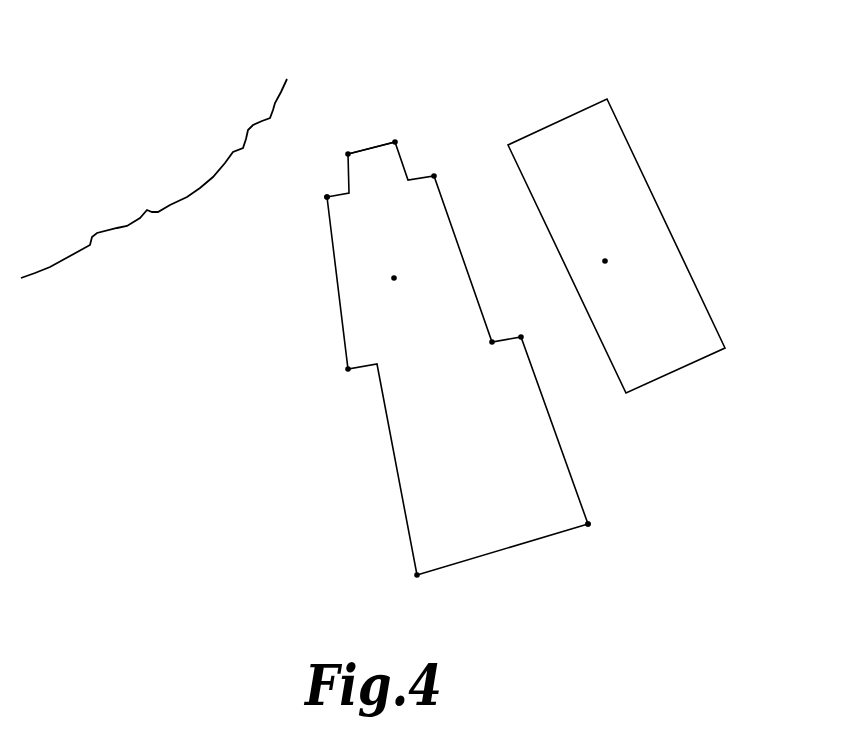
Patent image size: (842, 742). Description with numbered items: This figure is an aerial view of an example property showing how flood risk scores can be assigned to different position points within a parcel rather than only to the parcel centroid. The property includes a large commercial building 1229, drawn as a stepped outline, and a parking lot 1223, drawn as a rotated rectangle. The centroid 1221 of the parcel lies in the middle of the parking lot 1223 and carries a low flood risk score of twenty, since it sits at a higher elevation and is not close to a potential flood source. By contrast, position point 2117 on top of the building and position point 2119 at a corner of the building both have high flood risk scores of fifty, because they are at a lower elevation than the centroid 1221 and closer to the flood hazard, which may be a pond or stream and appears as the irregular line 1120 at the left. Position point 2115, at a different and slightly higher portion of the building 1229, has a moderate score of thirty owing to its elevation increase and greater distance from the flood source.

The boundary line 1120 is at (55, 265).
The commercial building 1229 is at (372, 147).
The position point 2119 is at (327, 197).
The position point 2117 is at (394, 278).
The position point 2115 is at (588, 524).
The parking lot 1223 is at (607, 99).
The centroid 1221 is at (605, 261).